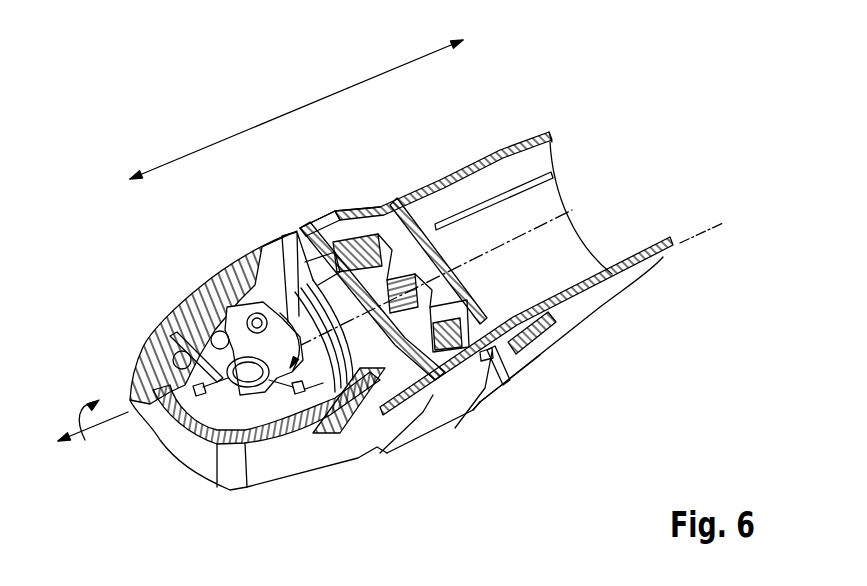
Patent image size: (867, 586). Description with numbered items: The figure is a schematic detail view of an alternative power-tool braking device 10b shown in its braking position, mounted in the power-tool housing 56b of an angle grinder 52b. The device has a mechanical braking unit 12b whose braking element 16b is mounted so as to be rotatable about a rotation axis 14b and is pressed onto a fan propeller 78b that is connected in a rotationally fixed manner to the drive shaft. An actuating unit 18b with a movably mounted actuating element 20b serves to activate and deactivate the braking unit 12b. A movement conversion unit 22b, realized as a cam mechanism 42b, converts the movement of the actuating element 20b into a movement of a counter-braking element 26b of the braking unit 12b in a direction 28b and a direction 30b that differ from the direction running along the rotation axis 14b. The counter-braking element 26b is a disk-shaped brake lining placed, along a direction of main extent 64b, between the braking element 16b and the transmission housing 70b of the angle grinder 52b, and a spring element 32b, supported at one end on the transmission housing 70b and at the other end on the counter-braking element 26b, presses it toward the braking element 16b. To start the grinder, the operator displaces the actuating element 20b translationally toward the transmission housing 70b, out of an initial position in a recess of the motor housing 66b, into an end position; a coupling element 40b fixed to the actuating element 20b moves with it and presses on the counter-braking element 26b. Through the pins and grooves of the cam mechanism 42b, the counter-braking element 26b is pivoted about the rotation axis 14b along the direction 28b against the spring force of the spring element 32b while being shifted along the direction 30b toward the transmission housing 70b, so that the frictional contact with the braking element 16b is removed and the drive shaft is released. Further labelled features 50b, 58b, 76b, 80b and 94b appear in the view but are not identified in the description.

The power-tool braking device 10b is at (355, 170).
The mechanical braking unit 12b is at (306, 199).
The rotation axis 14b is at (572, 210).
The braking element 16b is at (297, 231).
The actuating unit 18b is at (584, 353).
The actuating element 20b is at (543, 350).
The movement conversion unit 22b is at (517, 461).
The counter-braking element 26b is at (438, 388).
The direction 28b is at (85, 440).
The direction 30b is at (108, 430).
The spring element 32b is at (388, 372).
The coupling element 40b is at (672, 257).
The cam mechanism 42b is at (541, 453).
The housing shell 50b is at (636, 102).
The angle grinder 52b is at (664, 118).
The power-tool housing 56b is at (441, 160).
The guide rail 58b is at (530, 138).
The direction of main extent 64b is at (297, 107).
The motor housing 66b is at (493, 170).
The transmission housing 70b is at (243, 260).
The drive shaft 76b is at (372, 301).
The fan propeller 78b is at (382, 222).
The guide axis 80b is at (707, 237).
The mounting plate 94b is at (257, 303).